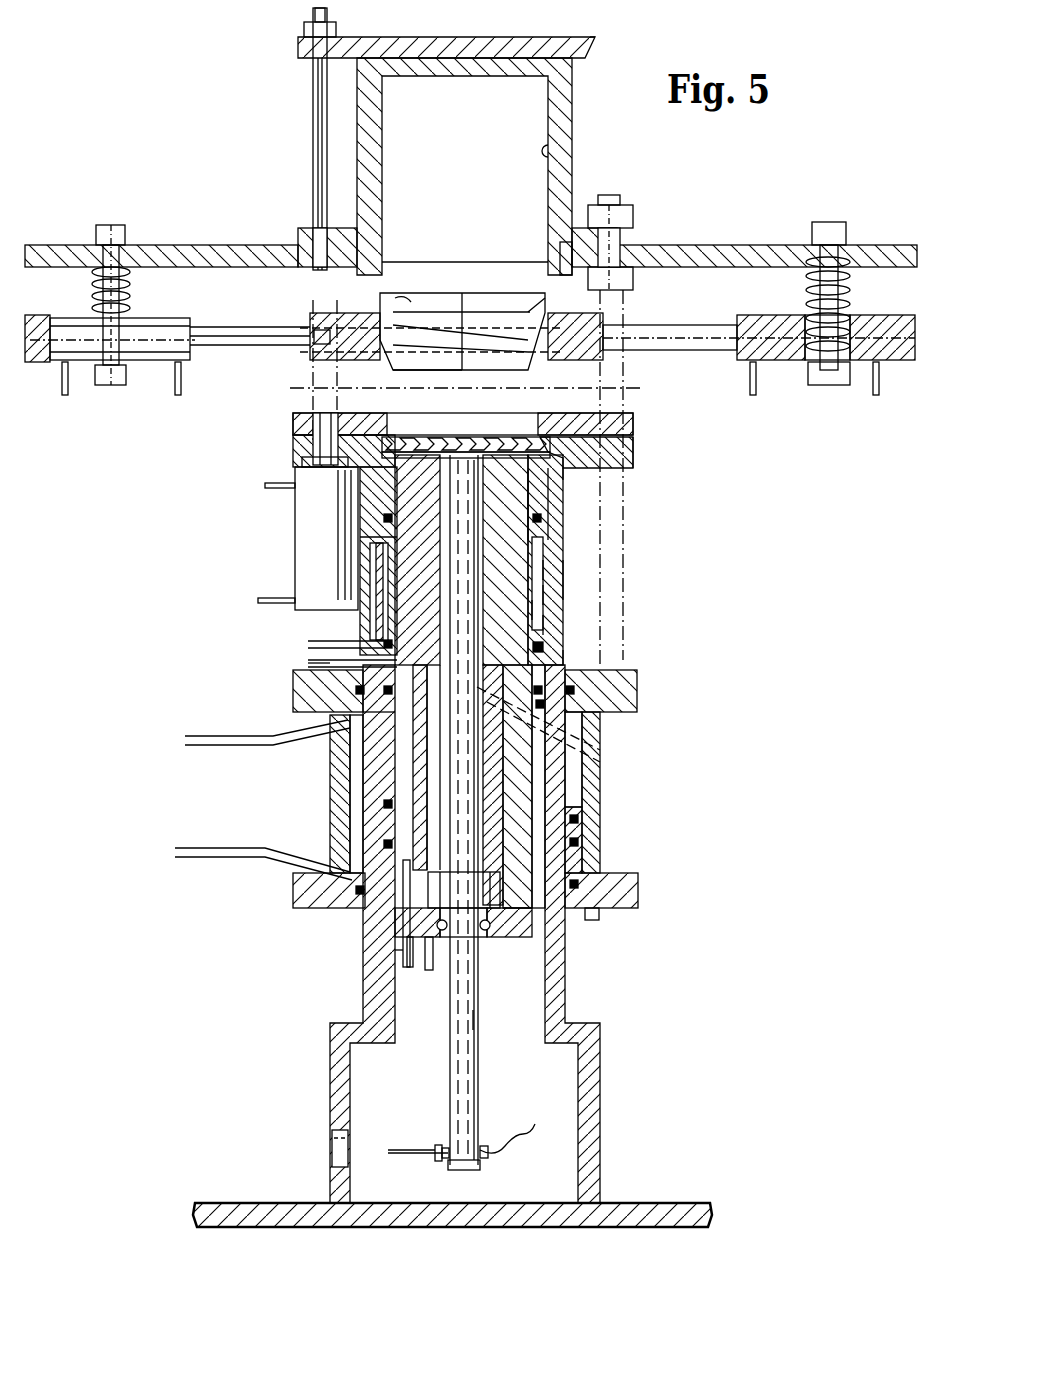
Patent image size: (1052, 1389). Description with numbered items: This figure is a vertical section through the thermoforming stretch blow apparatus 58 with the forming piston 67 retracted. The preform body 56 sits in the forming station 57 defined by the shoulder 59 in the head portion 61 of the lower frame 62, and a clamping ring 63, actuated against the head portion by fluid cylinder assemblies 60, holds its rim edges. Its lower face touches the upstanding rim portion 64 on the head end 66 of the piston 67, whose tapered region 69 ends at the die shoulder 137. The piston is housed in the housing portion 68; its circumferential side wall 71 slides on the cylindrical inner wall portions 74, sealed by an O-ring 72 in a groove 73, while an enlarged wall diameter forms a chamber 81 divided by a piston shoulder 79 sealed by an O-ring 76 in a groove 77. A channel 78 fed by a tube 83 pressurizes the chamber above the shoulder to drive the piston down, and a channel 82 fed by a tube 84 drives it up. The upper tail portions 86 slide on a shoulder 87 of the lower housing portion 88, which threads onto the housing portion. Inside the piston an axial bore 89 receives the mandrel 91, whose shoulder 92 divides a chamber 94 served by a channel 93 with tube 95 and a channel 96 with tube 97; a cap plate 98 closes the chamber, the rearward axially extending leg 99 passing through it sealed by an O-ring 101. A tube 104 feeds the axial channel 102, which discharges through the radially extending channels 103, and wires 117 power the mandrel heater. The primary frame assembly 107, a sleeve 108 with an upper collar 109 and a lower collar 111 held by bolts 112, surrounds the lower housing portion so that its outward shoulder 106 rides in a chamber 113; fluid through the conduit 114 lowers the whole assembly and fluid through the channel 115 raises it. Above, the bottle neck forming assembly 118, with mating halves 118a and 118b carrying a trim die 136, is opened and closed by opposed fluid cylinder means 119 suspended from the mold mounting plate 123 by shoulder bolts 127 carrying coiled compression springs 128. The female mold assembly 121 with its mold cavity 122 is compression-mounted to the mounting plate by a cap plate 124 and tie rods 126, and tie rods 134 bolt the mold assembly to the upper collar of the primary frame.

The cap plate 124 is at (448, 40).
The female mold assembly 121 is at (568, 52).
The tie rods 126 is at (313, 136).
The mold cavity 122 is at (553, 152).
The mold mounting plate 123 is at (745, 245).
The thermoforming stretch blow apparatus 58 is at (645, 242).
The coiled compression spring 128 is at (92, 283).
The fluid cylinder means 119 is at (175, 328).
The bottle neck forming assembly 118 is at (424, 302).
The mating half 118a is at (380, 298).
The mating half 118b is at (498, 300).
The trim die 136 is at (395, 357).
The tie rods 134 is at (600, 312).
The shoulder bolts 127 is at (838, 300).
The clamping ring 63 is at (298, 418).
The forming station 57 is at (312, 440).
The cylindrical inner wall portions 74 is at (302, 462).
The upstanding rim portion 64 is at (405, 452).
The head end 66 is at (495, 452).
The preform body 56 is at (600, 438).
The head portion 61 is at (637, 461).
The shoulder 59 is at (602, 468).
The tapered region 69 is at (548, 470).
The lower frame 62 is at (556, 505).
The die shoulder 137 is at (560, 520).
The groove 73 is at (386, 516).
The O-ring 72 is at (386, 520).
The bore 89 is at (392, 537).
The channel 78 is at (378, 571).
The fluid cylinder assemblies 60 is at (295, 584).
The tube 83 is at (340, 641).
The channel 82 is at (387, 659).
The tube 84 is at (308, 664).
The circumferential side wall 71 is at (548, 570).
The housing portion 68 is at (557, 578).
The forming piston 67 is at (548, 596).
The chamber 81 is at (538, 608).
The shoulder 79 is at (548, 628).
The O-ring 76 is at (545, 648).
The groove 77 is at (560, 660).
The upper tail portions 86 is at (372, 697).
The collar 109 is at (637, 700).
The shoulder 87 is at (380, 708).
The conduit 114 is at (185, 740).
The channel 115 is at (185, 848).
The lower housing portion 88 is at (350, 748).
The chamber 113 is at (353, 767).
The shoulder 92 is at (437, 888).
The chamber 94 is at (433, 768).
The mandrel 91 is at (447, 805).
The primary frame assembly 107 is at (605, 733).
The radially extending channels 103 is at (602, 750).
The sleeve 108 is at (600, 774).
The shoulder 106 is at (580, 840).
The collar 111 is at (630, 880).
The bolts 112 is at (600, 915).
The channel 93 is at (433, 886).
The O-ring 101 is at (488, 930).
The cap plate 98 is at (533, 937).
The tube 95 is at (400, 950).
The channel 96 is at (432, 937).
The tube 97 is at (436, 968).
The axial channel 102 is at (474, 1018).
The rearward axially extending leg 99 is at (480, 1095).
The tube 104 is at (407, 1150).
The wires 117 is at (528, 1128).